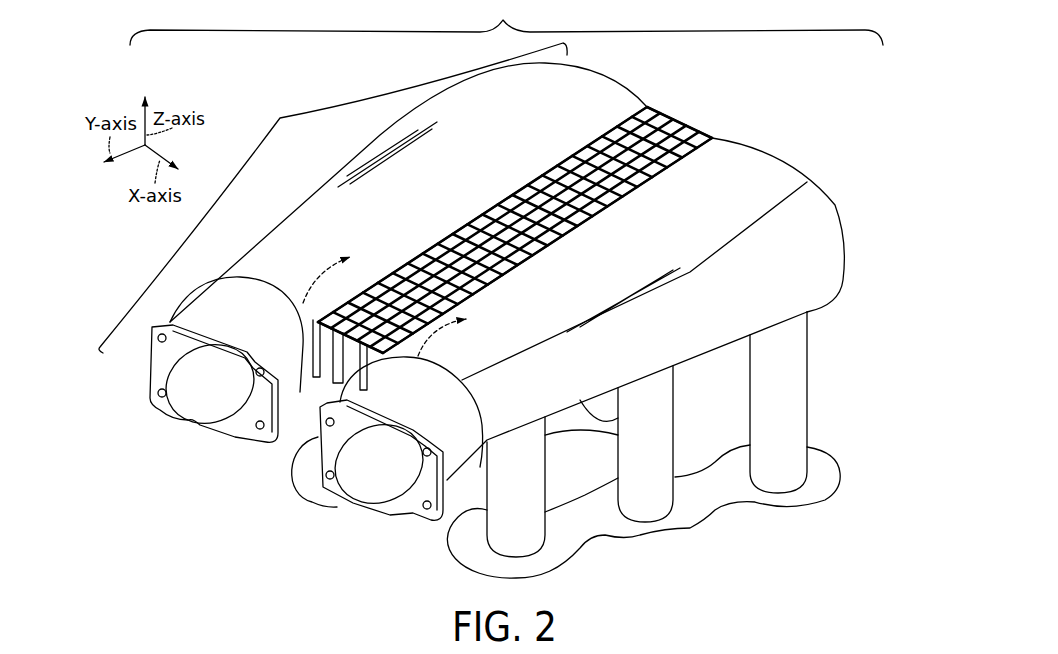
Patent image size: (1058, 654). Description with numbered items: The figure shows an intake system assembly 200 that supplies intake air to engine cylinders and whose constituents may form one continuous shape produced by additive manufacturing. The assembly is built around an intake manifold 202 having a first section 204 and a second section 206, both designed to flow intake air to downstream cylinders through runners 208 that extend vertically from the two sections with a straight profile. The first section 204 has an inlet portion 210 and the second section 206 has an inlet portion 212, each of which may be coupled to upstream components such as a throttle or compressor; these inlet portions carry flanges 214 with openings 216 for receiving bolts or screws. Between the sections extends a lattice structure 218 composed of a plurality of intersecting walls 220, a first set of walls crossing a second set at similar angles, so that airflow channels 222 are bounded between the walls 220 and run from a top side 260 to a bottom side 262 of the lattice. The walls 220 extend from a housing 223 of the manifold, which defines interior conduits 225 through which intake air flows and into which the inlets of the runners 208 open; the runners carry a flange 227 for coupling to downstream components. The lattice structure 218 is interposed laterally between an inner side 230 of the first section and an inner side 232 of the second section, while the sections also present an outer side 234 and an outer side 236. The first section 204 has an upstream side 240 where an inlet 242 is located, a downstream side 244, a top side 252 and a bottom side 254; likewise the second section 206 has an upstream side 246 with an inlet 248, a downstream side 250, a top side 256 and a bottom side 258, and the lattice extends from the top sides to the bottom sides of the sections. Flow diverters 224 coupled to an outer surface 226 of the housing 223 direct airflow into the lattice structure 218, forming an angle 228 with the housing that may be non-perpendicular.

The intake system assembly 200 is at (506, 22).
The intake manifold 202 is at (668, 78).
The first section 204 is at (333, 198).
The second section 206 is at (712, 397).
The runners 208 is at (795, 417).
The inlet portion 210 is at (252, 322).
The inlet portion 212 is at (423, 406).
The flanges 214 is at (217, 428).
The openings 216 is at (163, 399).
The lattice structure 218 is at (699, 101).
The intersecting walls 220 is at (534, 183).
The airflow channels 222 is at (500, 212).
The housing 223 is at (401, 220).
The flow diverters 224 is at (323, 283).
The interior conduits 225 is at (225, 397).
The outer surface 226 is at (353, 256).
The flange 227 is at (632, 530).
The angle 228 is at (364, 272).
The inner side 230 is at (478, 250).
The inner side 232 is at (440, 280).
The outer side 234 is at (333, 163).
The outer side 236 is at (667, 320).
The upstream side 240 is at (145, 455).
The inlet 242 is at (213, 402).
The downstream side 244 is at (625, 80).
The upstream side 246 is at (337, 541).
The inlet 248 is at (383, 486).
The downstream side 250 is at (777, 151).
The top side 252 is at (503, 108).
The bottom side 254 is at (267, 213).
The top side 256 is at (707, 194).
The bottom side 258 is at (735, 347).
The top side 260 is at (590, 141).
The bottom side 262 is at (723, 134).